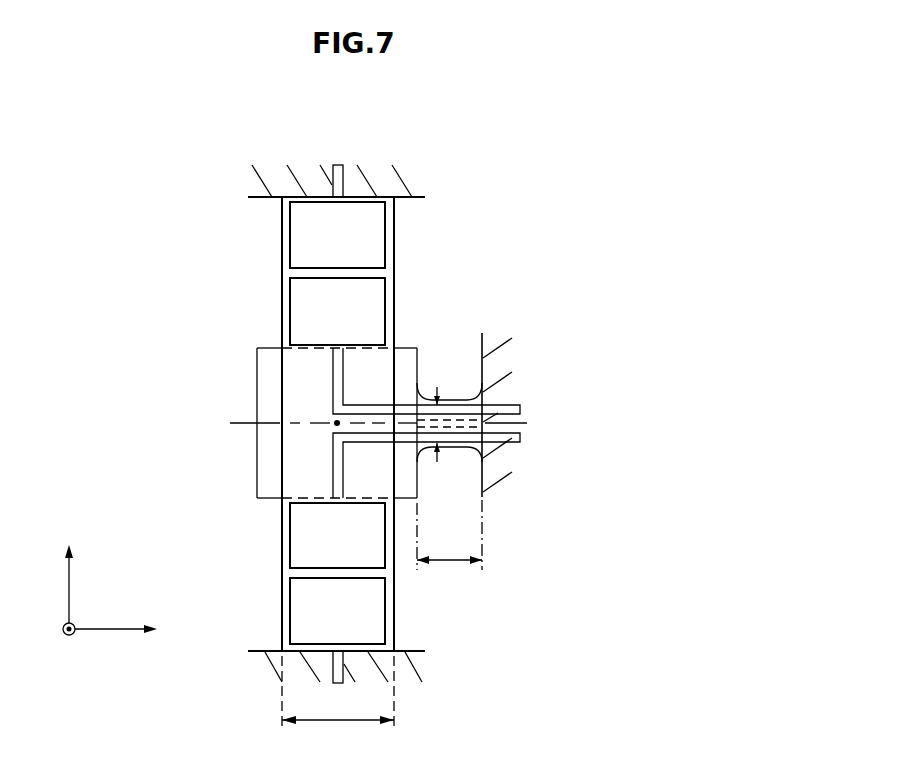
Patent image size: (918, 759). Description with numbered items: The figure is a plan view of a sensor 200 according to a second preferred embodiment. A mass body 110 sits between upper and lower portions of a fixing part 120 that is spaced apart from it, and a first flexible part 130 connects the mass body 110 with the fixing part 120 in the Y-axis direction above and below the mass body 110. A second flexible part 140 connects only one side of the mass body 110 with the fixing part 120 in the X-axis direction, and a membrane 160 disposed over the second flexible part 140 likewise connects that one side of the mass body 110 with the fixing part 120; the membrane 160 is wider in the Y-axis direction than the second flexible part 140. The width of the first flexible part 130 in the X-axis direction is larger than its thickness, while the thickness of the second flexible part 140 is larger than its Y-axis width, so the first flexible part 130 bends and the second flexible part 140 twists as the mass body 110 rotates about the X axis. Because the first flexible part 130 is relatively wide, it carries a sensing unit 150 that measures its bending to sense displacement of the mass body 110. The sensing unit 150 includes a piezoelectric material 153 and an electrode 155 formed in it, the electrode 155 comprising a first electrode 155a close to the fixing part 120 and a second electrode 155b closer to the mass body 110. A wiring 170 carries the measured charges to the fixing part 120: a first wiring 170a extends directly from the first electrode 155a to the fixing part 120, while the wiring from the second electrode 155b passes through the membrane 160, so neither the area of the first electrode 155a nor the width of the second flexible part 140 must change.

The sensor 200 is at (128, 165).
The mass body 110 is at (270, 355).
The fixing part 120 is at (376, 180).
The first flexible part 130 is at (282, 266).
The second flexible part 140 is at (467, 407).
The sensing unit 150 is at (457, 423).
The piezoelectric material 153 is at (392, 322).
The electrode 155 is at (421, 423).
The first electrode 155a is at (380, 232).
The second electrode 155b is at (382, 300).
The membrane 160 is at (453, 448).
The wiring 170 is at (520, 409).
The first wiring 170a is at (337, 172).